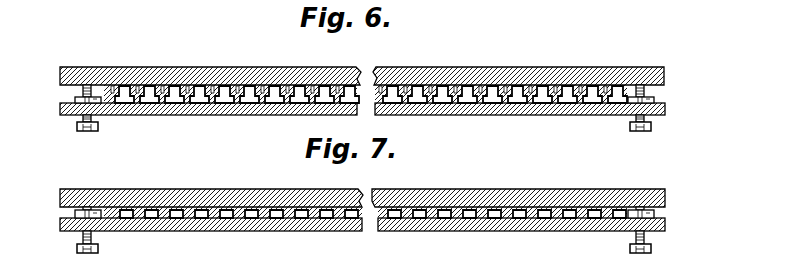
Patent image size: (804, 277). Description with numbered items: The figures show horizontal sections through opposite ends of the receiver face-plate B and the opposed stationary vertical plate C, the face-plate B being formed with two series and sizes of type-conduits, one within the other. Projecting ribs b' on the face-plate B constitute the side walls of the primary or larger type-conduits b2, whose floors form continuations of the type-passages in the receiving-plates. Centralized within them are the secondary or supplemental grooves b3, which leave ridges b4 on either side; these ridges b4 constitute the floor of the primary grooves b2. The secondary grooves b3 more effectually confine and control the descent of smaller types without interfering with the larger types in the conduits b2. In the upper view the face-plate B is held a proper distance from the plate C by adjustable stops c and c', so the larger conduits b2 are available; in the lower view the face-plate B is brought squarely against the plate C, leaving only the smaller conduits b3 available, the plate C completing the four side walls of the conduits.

In FIG. 6, the face-plate B is at (193, 62).
In FIG. 6, the stationary vertical plate C is at (362, 120).
In FIG. 6, the projecting ribs b' is at (353, 63).
In FIG. 7, the projecting ribs b' is at (167, 186).
In FIG. 6, the type-conduits b2 is at (541, 122).
In FIG. 6, the secondary grooves b3 is at (129, 88).
In FIG. 7, the secondary grooves b3 is at (152, 220).
In FIG. 6, the ridges b4 is at (255, 104).
In FIG. 7, the ridges b4 is at (185, 220).
In FIG. 6, the bolt c is at (81, 110).
In FIG. 7, the bolt c is at (81, 230).
In FIG. 6, the adjustable stops c' is at (647, 111).
In FIG. 7, the adjustable stops c' is at (647, 230).